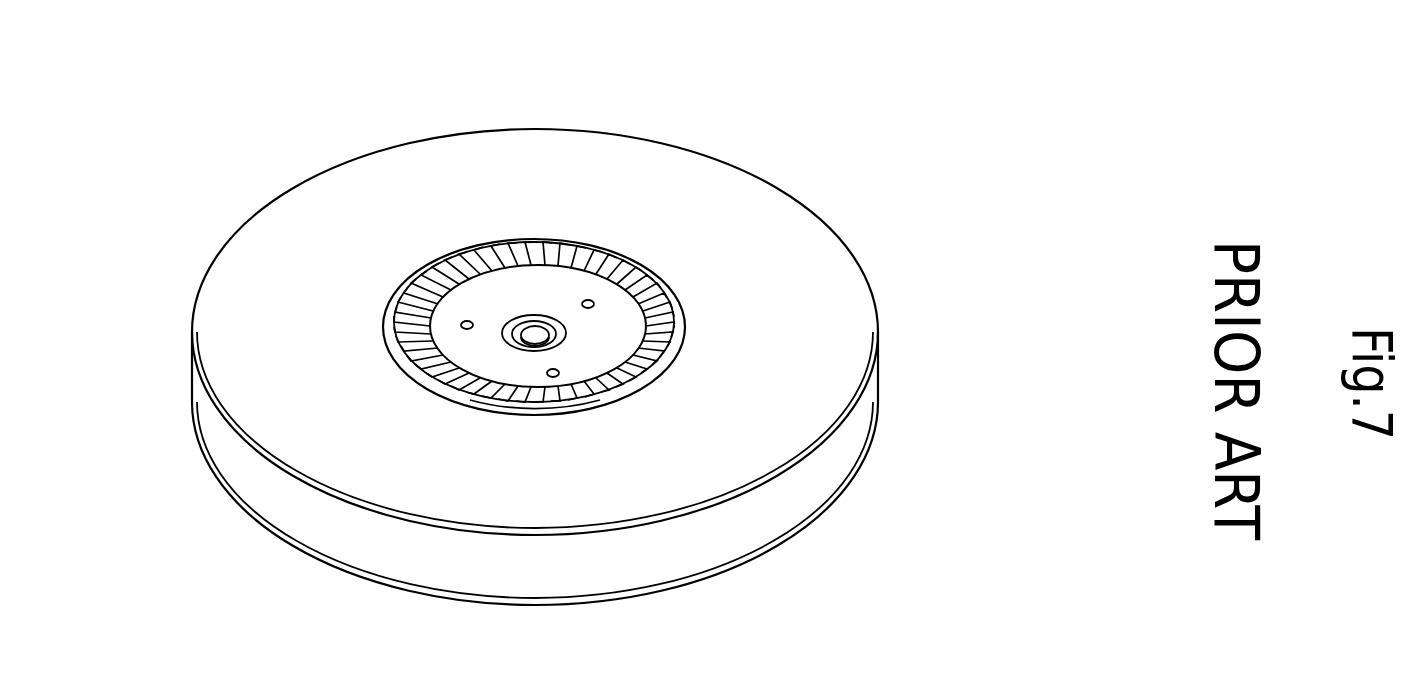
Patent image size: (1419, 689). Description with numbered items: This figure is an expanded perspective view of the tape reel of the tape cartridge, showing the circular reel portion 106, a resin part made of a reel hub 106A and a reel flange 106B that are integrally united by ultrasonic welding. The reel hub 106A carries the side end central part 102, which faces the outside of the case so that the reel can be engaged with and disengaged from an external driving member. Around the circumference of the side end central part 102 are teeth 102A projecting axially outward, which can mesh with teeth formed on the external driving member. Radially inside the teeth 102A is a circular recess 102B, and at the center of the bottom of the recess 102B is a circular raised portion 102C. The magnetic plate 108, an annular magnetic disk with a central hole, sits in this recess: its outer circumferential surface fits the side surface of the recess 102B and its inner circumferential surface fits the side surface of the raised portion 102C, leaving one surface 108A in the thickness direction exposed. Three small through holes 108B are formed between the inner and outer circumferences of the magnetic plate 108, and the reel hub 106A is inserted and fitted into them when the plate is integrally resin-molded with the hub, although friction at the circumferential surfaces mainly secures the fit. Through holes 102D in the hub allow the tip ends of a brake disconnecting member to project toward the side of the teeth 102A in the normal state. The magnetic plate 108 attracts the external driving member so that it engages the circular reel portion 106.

The side end central part 102 is at (562, 237).
The teeth 102A is at (660, 308).
The circular recess 102B is at (500, 296).
The circular raised portion 102C is at (547, 330).
The through holes 102D is at (568, 393).
The circular reel portion 106 is at (653, 367).
The reel hub 106A is at (837, 253).
The reel flange 106B is at (833, 466).
The magnetic plate 108 is at (607, 318).
The surface 108A is at (493, 365).
The through holes 108B is at (583, 283).